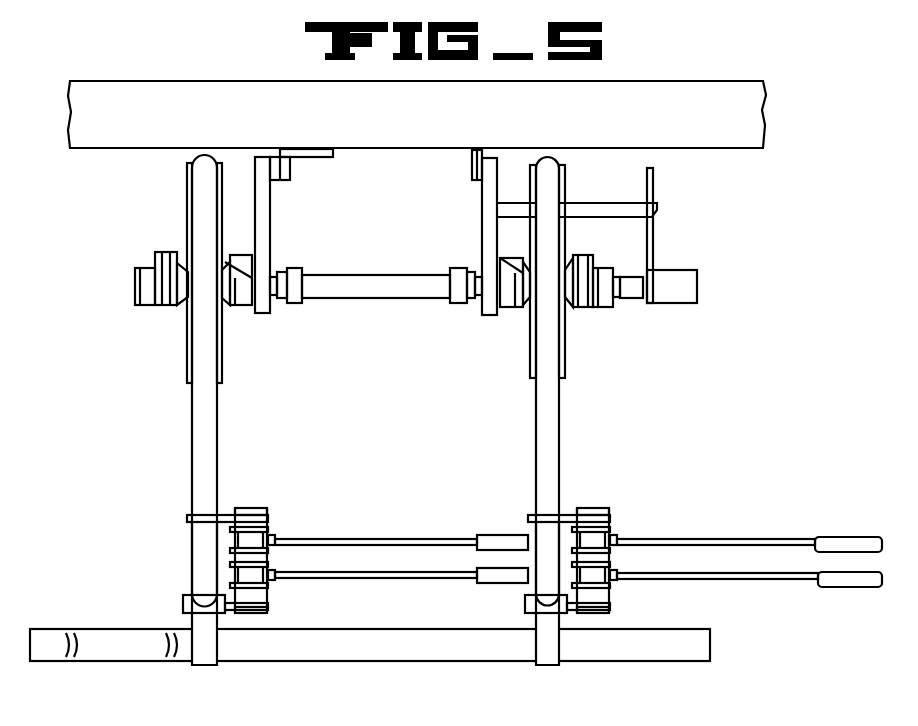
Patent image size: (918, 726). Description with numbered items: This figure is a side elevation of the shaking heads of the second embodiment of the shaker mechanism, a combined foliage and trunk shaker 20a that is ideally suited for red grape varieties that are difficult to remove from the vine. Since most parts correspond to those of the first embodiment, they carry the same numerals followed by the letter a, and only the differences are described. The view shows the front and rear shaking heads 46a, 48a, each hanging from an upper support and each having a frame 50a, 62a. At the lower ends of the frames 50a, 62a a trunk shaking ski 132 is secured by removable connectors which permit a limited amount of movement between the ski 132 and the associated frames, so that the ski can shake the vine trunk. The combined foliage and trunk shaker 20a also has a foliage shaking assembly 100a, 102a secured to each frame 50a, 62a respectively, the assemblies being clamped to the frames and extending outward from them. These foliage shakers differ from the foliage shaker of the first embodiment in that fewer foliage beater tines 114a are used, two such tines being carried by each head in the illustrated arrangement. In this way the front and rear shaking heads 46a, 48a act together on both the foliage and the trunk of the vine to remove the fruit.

The combined foliage and trunk shaker 20a is at (725, 213).
The front shaking head 46a is at (192, 427).
The rear shaking head 48a is at (558, 415).
The frame 50a is at (198, 477).
The frame 62a is at (557, 457).
The foliage shaking assembly 100a is at (323, 537).
The foliage shaking assembly 102a is at (655, 538).
The foliage beater tines 114a is at (387, 572).
The trunk shaking ski 132 is at (385, 657).